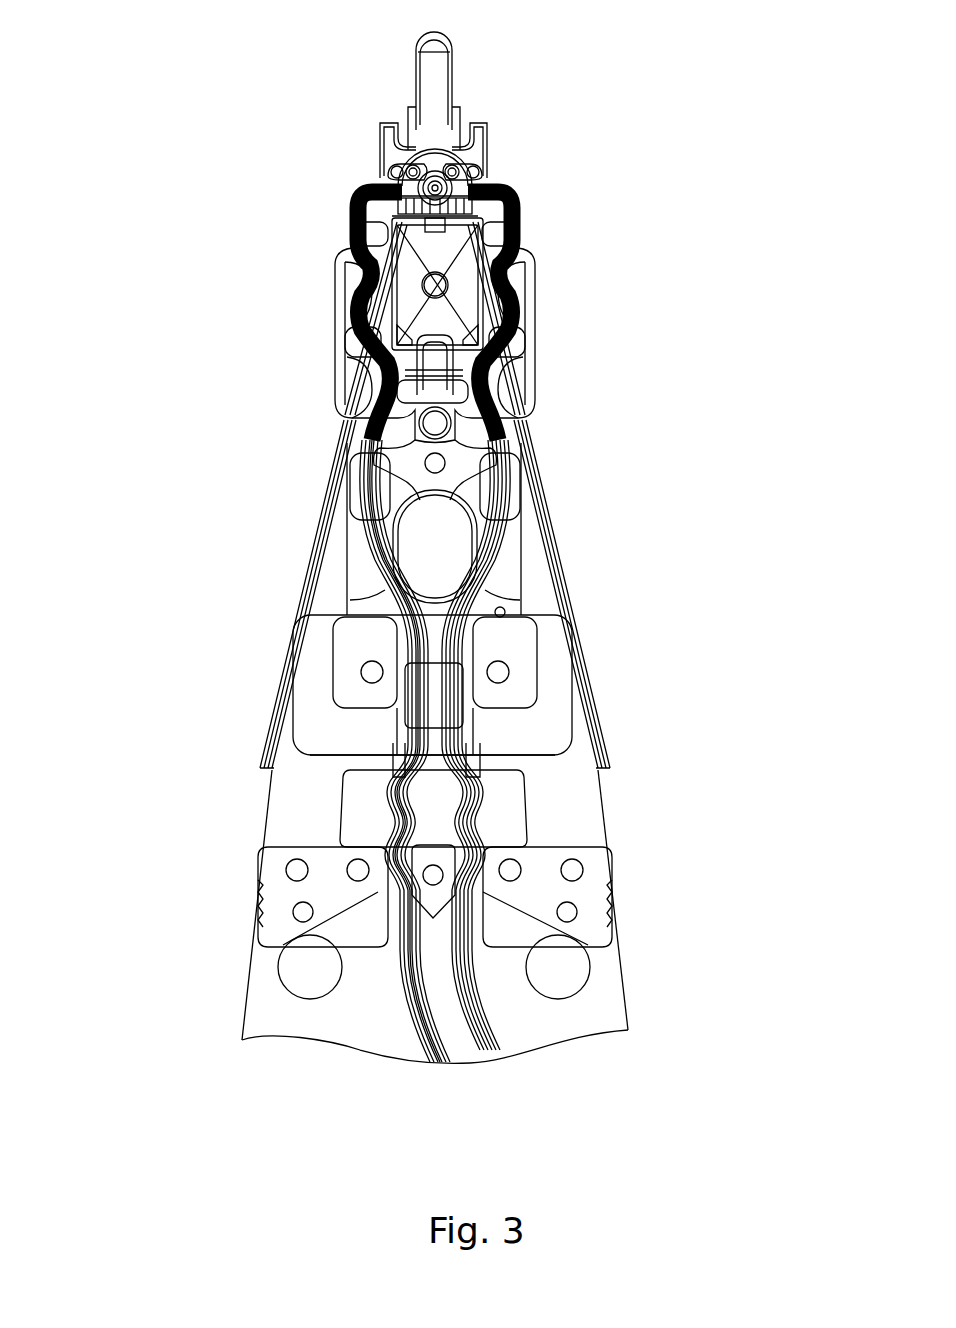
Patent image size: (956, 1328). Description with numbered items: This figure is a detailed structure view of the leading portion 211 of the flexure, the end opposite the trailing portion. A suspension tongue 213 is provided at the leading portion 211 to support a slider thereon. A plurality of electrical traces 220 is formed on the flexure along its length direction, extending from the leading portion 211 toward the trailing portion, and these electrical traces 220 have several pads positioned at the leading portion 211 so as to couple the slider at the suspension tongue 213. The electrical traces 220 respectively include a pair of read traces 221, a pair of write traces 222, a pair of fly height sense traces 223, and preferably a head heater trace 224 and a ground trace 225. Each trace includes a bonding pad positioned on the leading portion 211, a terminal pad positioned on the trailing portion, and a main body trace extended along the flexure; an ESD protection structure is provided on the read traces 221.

The leading portion 211 is at (200, 73).
The suspension tongue 213 is at (458, 294).
The electrical traces 220 is at (498, 363).
The read traces 221 is at (402, 220).
The write traces 222 is at (487, 197).
The fly height sense traces 223 is at (440, 213).
The head heater trace 224 is at (367, 187).
The ground trace 225 is at (457, 217).